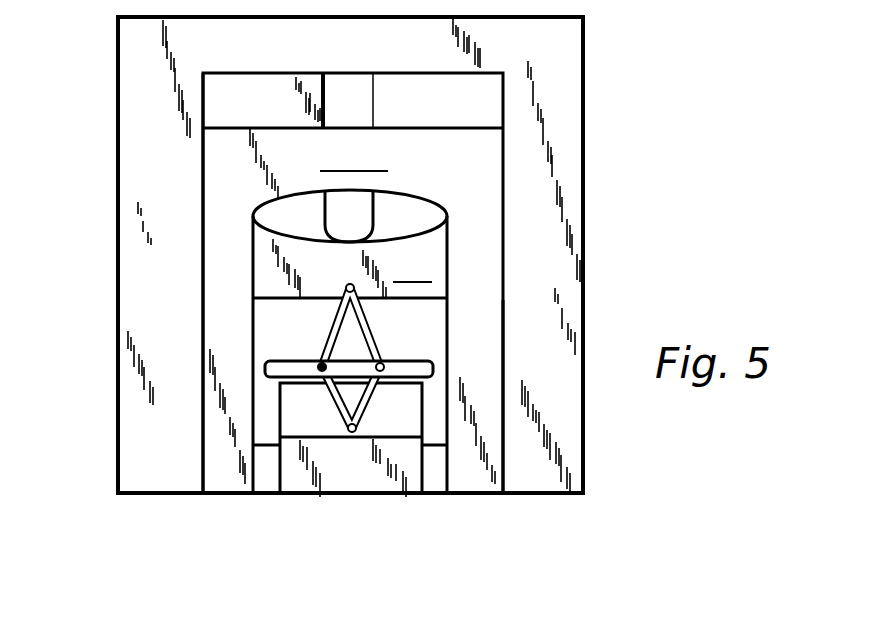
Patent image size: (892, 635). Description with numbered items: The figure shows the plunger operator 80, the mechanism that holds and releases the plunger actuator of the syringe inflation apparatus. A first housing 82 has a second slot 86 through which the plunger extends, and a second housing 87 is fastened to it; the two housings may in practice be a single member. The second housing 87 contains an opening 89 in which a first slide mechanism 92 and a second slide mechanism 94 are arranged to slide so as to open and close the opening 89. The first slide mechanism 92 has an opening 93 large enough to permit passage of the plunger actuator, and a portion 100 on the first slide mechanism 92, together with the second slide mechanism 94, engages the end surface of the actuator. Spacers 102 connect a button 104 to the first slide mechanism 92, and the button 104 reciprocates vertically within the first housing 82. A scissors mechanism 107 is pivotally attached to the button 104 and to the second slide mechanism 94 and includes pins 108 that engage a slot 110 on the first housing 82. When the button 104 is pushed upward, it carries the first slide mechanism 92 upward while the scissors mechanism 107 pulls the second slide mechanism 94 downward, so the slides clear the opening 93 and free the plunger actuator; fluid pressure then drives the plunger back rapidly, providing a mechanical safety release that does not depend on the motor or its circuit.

The plunger operator 80 is at (288, 512).
The first housing 82 is at (361, 346).
The second slot 86 is at (362, 92).
The second housing 87 is at (584, 214).
The opening 89 is at (497, 143).
The first slide mechanism 92 is at (220, 156).
The opening 93 is at (280, 217).
The second slide mechanism 94 is at (416, 263).
The portion 100 is at (355, 154).
The spacers 102 is at (433, 496).
The button 104 is at (328, 496).
The scissors mechanism 107 is at (367, 337).
The pins 108 is at (322, 365).
The slot 110 is at (437, 365).